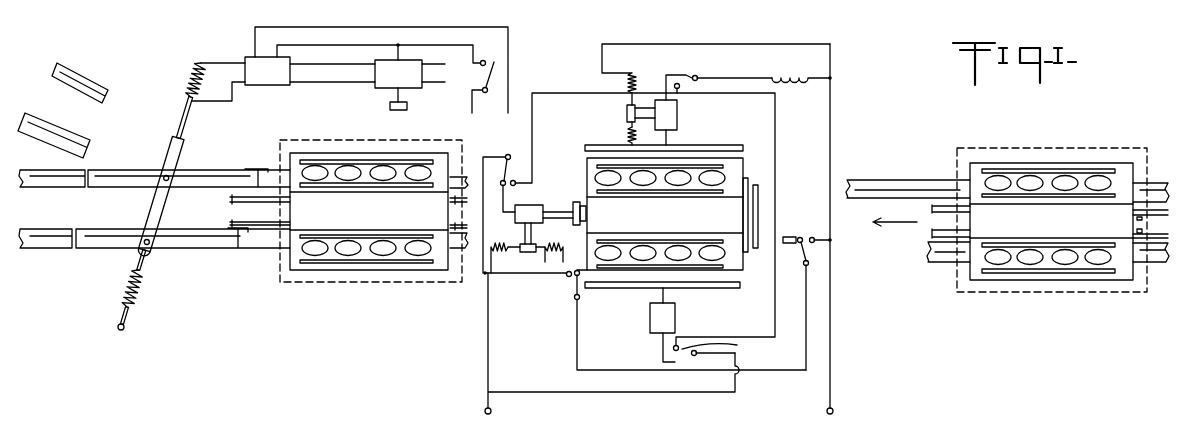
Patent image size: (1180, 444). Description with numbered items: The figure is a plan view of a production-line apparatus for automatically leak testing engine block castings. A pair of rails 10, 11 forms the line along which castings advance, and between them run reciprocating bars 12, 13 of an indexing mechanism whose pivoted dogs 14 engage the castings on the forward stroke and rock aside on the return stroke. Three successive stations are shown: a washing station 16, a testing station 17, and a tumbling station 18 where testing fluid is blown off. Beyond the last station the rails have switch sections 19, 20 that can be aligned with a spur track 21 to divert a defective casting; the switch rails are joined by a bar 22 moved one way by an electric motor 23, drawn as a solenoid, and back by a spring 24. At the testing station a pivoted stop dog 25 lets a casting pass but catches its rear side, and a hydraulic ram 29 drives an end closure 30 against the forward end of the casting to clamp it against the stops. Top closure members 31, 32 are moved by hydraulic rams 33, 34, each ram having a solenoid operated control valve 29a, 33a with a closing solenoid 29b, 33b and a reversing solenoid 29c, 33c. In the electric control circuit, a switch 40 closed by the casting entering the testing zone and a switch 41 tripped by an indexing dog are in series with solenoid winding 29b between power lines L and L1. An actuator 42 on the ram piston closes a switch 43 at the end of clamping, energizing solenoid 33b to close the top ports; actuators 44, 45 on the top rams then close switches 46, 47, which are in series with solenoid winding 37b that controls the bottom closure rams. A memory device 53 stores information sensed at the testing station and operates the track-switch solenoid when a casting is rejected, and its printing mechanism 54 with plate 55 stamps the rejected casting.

The rail 10 is at (870, 180).
The rail 11 is at (947, 256).
The reciprocating bar 12 is at (932, 208).
The reciprocating bar 13 is at (932, 233).
The dog 14 is at (788, 244).
The washing station 16 is at (1048, 323).
The testing station 17 is at (650, 421).
The tumbling station 18 is at (362, 313).
The switch section 19 is at (202, 172).
The switch section 20 is at (190, 250).
The spur track 21 is at (78, 138).
The bar 22 is at (152, 205).
The electric motor 23 is at (191, 70).
The spring 24 is at (125, 286).
The pivoted stop dog 25 is at (745, 212).
The hydraulic ram 29 is at (541, 203).
The solenoid operated control valve 29a is at (534, 231).
The solenoid winding 29b is at (500, 238).
The solenoid 29c is at (543, 251).
The end closure 30 is at (583, 211).
The top closure member 31 is at (719, 145).
The top closure member 32 is at (604, 288).
The hydraulic ram 33 is at (678, 113).
The solenoid operated control valve 33a is at (626, 112).
The solenoid winding 33b is at (636, 78).
The solenoid 33c is at (626, 132).
The hydraulic ram 34 is at (676, 313).
The solenoid winding 37b is at (799, 73).
The switch 40 is at (572, 278).
The switch 41 is at (801, 237).
The actuator 42 is at (510, 209).
The switch 43 is at (511, 178).
The actuator 44 is at (637, 88).
The actuator 45 is at (660, 344).
The switch 46 is at (696, 75).
The switch 47 is at (723, 355).
The memory device 53 is at (262, 81).
The printing mechanism 54 is at (385, 82).
The plate 55 is at (397, 110).
The power line L is at (609, 355).
The power line L1 is at (824, 244).